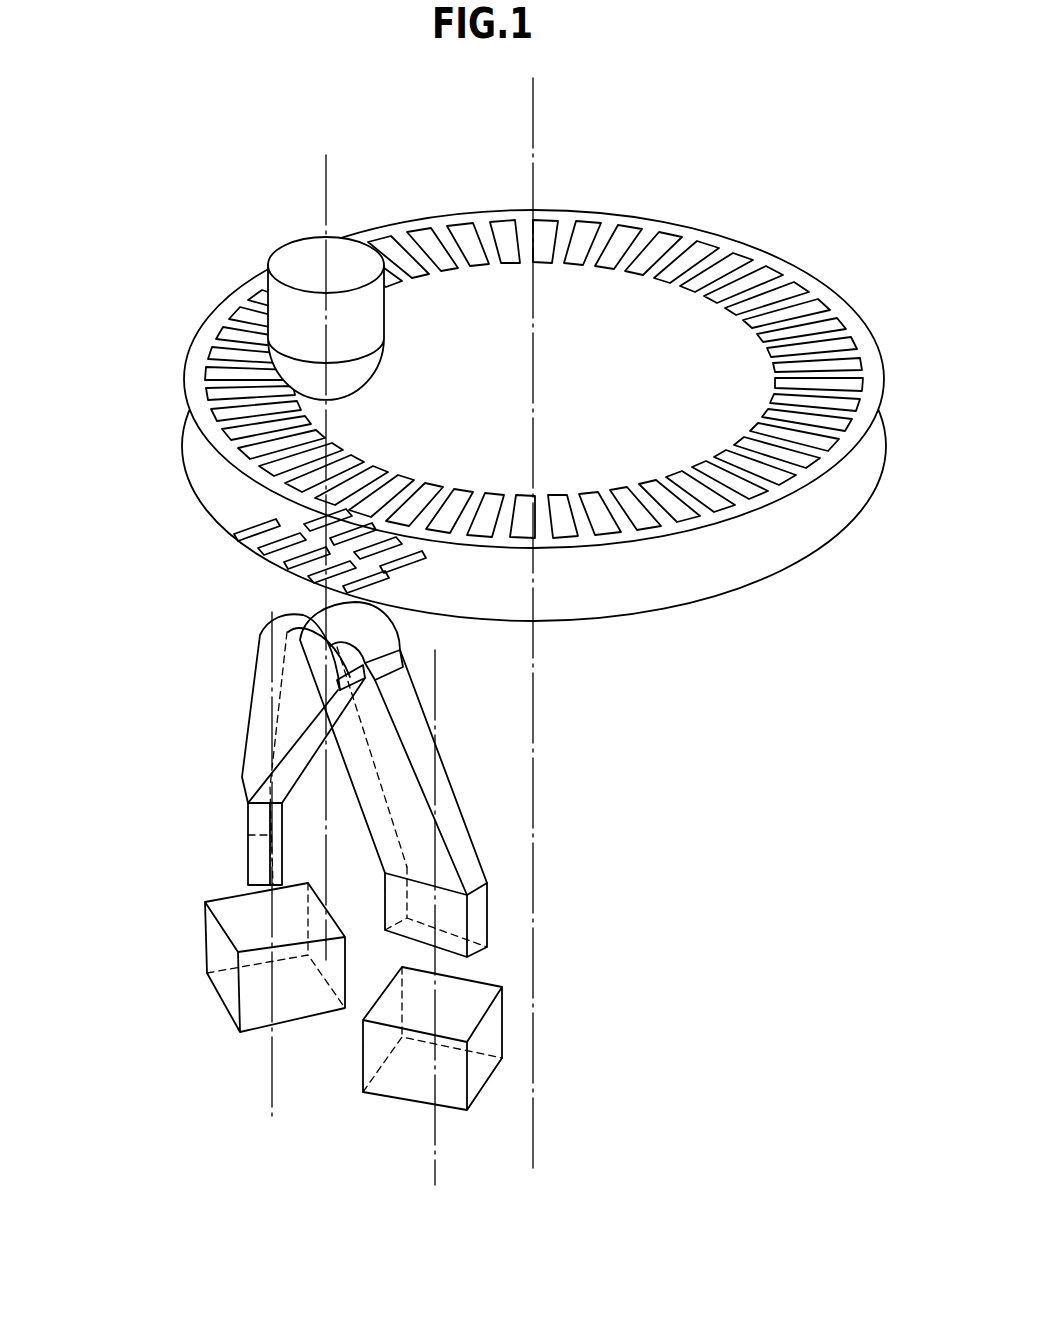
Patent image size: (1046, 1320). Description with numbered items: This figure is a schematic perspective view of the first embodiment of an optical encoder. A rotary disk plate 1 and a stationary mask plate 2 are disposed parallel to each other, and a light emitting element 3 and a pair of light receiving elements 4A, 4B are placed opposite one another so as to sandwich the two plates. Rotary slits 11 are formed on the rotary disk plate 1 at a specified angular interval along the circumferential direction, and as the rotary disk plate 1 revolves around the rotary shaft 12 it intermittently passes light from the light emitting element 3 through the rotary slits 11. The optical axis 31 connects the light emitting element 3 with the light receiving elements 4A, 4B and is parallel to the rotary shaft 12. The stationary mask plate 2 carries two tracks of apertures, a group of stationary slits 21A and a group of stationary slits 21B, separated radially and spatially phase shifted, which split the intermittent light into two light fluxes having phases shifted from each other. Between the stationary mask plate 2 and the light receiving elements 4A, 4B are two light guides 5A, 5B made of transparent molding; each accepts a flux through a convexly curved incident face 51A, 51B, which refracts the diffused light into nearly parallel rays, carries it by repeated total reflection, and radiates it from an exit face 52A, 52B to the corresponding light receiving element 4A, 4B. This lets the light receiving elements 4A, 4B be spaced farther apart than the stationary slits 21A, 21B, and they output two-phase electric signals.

The rotary disk plate 1 is at (665, 221).
The rotary slits 11 is at (738, 258).
The rotary shaft 12 is at (535, 114).
The stationary mask plate 2 is at (213, 477).
The stationary slits 21A is at (250, 514).
The stationary slits 21B is at (418, 558).
The light emitting element 3 is at (278, 252).
The optical axis 31 is at (328, 182).
The light receiving element 4A is at (205, 944).
The light receiving element 4B is at (502, 1088).
The light guide 5A is at (236, 743).
The light guide 5B is at (457, 789).
The incident face 51A is at (304, 616).
The incident face 51B is at (380, 633).
The exit face 52A is at (262, 861).
The exit face 52B is at (448, 943).